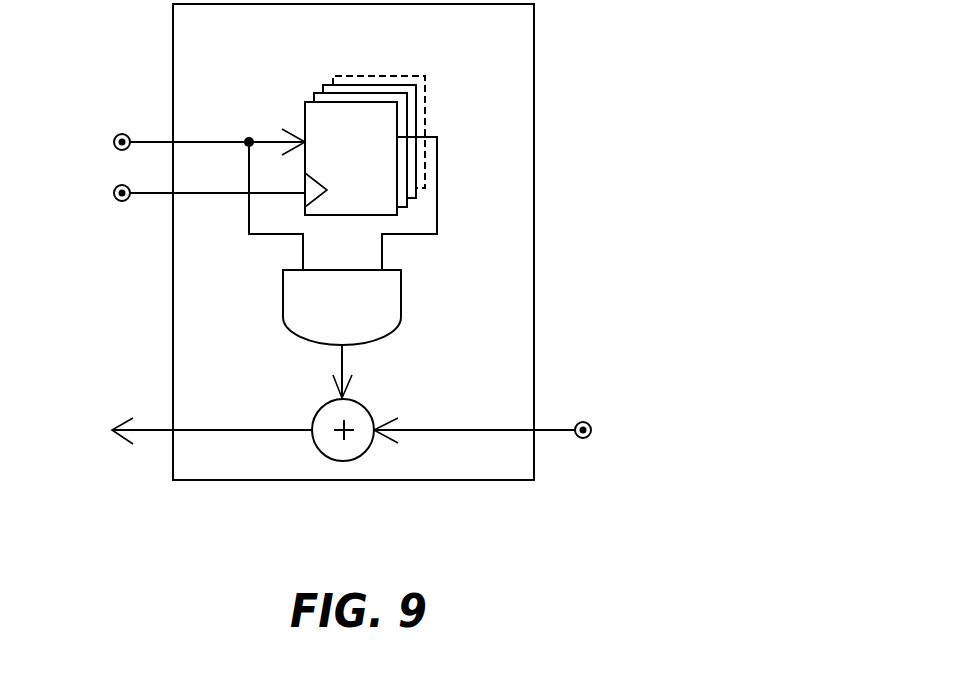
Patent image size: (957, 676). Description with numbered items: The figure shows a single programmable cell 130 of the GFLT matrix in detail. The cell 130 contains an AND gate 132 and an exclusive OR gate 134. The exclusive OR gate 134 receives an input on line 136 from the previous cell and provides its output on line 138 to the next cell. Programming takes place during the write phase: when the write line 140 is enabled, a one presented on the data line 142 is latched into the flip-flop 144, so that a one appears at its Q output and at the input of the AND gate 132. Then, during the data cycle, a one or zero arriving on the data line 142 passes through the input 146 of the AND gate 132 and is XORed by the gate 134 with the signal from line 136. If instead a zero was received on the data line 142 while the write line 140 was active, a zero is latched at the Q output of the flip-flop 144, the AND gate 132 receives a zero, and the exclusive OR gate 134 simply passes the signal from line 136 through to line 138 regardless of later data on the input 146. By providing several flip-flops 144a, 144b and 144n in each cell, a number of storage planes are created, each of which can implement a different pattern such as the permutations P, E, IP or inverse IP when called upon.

The cell 130 is at (541, 83).
The AND gate 132 is at (297, 302).
The exclusive OR gate 134 is at (317, 447).
The line from previous cell 136 is at (478, 428).
The line to next cell 138 is at (249, 430).
The write line 140 is at (153, 196).
The data line 142 is at (153, 140).
The flip-flop 144 is at (310, 117).
The flip-flop 144a is at (317, 97).
The flip-flop 144b is at (327, 90).
The flip-flop 144n is at (362, 77).
The input of AND gate 146 is at (302, 253).